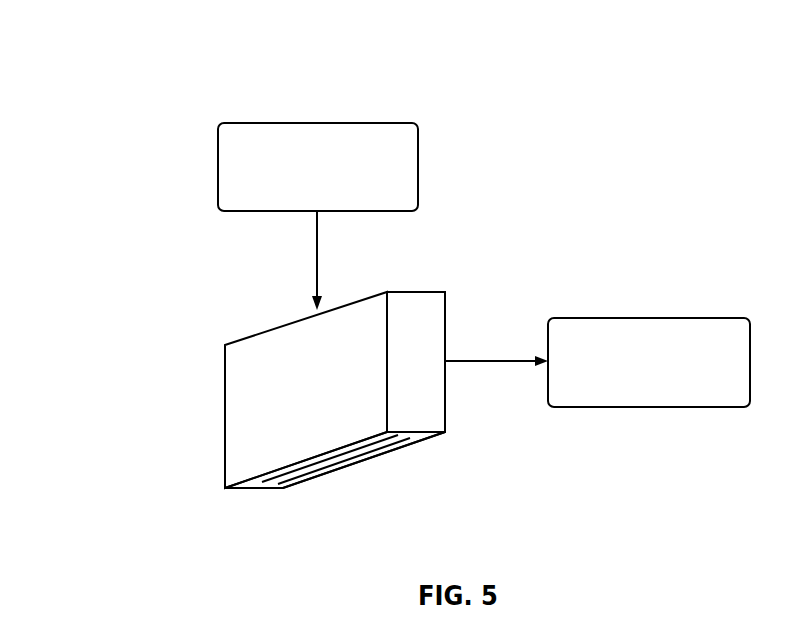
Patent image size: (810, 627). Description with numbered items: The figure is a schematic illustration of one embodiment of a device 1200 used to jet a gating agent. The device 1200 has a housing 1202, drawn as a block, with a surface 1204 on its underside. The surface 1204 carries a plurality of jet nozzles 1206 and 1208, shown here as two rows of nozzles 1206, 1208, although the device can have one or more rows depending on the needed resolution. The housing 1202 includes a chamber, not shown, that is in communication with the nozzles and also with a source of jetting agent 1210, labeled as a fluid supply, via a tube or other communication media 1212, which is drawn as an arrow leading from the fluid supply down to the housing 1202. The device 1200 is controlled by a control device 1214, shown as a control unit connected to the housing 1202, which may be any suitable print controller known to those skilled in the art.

The device 1200 is at (122, 46).
The housing 1202 is at (435, 387).
The surface 1204 is at (413, 440).
The jet nozzles 1206 is at (265, 482).
The jet nozzles 1208 is at (337, 465).
The source of jetting agent 1210 is at (298, 122).
The tube or other communication media 1212 is at (318, 262).
The control device 1214 is at (628, 318).